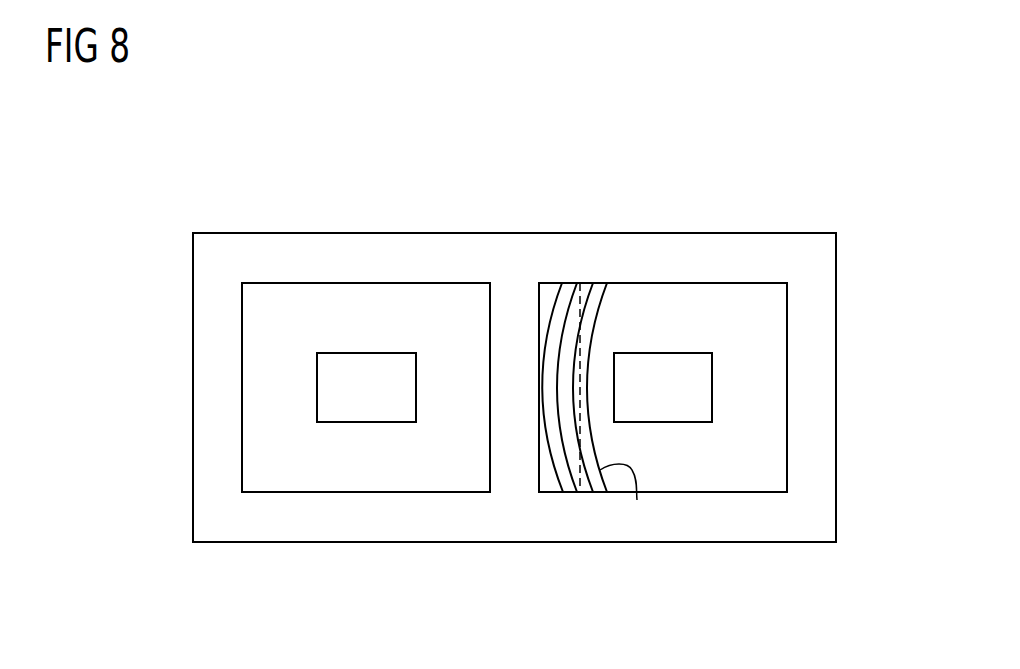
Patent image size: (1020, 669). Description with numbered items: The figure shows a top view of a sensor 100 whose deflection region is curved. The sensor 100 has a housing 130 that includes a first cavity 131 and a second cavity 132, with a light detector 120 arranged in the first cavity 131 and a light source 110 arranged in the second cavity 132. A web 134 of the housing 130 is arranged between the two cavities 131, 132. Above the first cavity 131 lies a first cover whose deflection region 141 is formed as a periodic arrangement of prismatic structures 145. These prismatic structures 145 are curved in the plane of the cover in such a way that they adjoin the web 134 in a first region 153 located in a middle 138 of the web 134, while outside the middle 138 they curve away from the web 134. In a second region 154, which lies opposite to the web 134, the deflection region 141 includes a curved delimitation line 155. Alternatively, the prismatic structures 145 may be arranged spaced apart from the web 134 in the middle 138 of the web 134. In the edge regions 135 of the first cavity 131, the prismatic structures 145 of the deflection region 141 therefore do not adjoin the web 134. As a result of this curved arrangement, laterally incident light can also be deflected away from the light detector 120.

The sensor 100 is at (199, 175).
The light source 110 is at (369, 400).
The light detector 120 is at (702, 387).
The housing 130 is at (823, 300).
The first cavity 131 is at (762, 460).
The second cavity 132 is at (284, 459).
The web 134 is at (499, 463).
The edge regions 135 is at (767, 283).
The middle of the web 138 is at (539, 387).
The deflection region 141 is at (575, 292).
The prismatic structures 145 is at (548, 297).
The first region 153 is at (565, 470).
The second region 154 is at (600, 483).
The curved delimitation line 155 is at (637, 500).